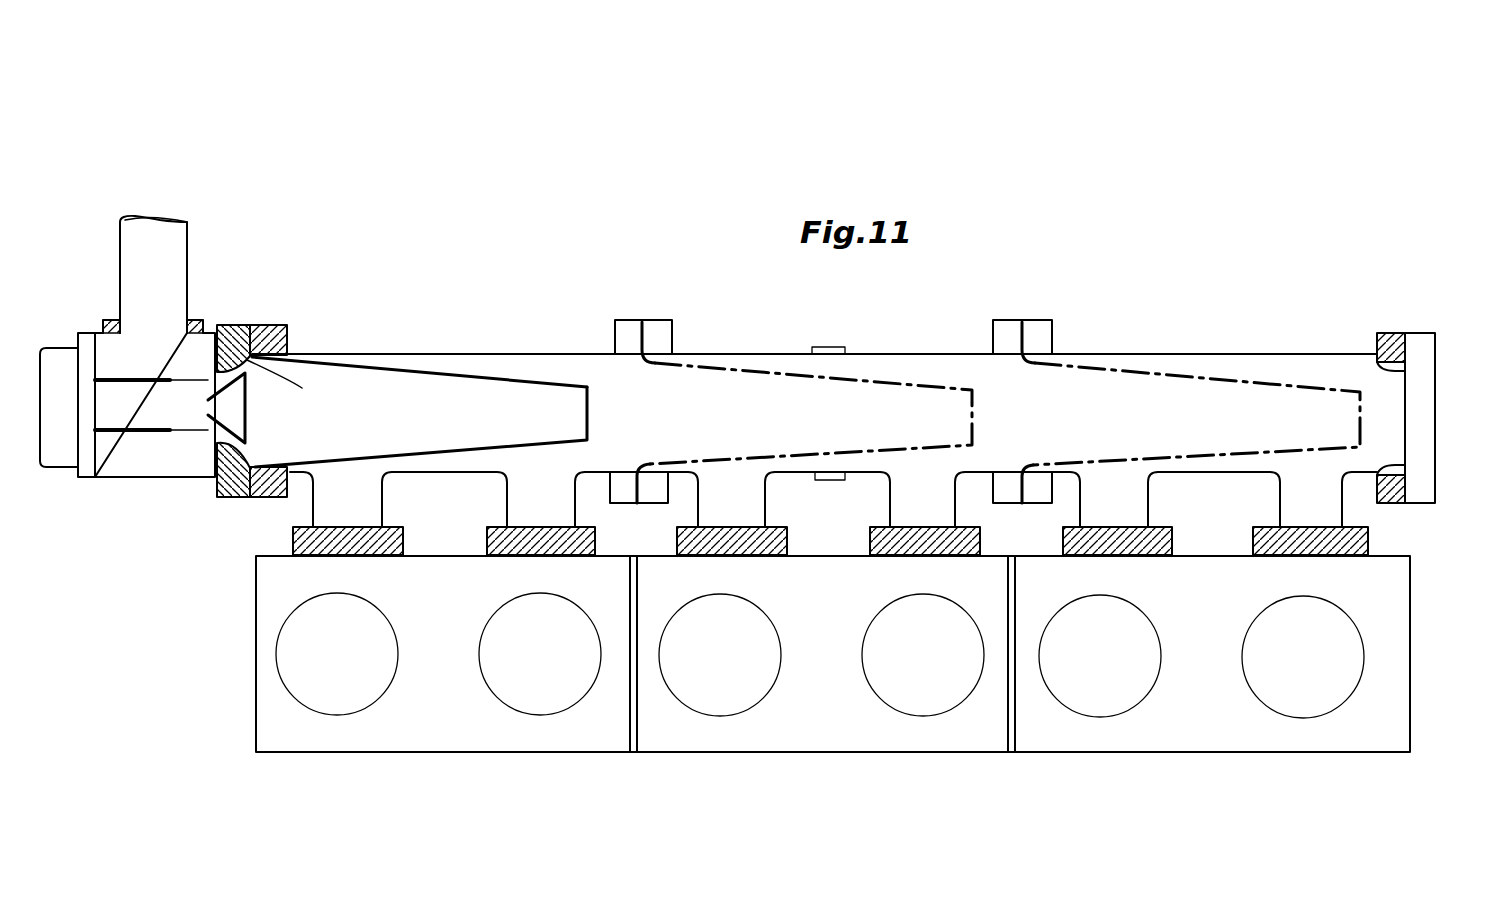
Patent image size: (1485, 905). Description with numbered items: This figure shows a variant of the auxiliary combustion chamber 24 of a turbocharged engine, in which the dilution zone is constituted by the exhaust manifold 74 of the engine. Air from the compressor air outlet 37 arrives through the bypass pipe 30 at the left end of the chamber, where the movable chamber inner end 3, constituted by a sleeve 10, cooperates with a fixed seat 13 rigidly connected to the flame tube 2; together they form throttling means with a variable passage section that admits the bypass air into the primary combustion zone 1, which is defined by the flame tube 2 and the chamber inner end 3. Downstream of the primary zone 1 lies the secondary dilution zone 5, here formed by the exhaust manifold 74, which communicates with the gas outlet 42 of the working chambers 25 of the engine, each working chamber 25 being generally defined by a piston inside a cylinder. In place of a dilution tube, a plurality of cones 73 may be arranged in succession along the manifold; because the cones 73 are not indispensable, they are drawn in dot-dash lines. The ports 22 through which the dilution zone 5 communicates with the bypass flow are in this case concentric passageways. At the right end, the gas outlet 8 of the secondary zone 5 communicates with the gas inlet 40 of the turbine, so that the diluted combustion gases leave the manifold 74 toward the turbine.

The air outlet 37 is at (153, 192).
The bypass pipe 30 is at (172, 258).
The fixed seat 13 is at (243, 357).
The sleeve 10 is at (292, 395).
The primary combustion zone 1 is at (313, 385).
The flame tube 2 is at (415, 370).
The exhaust manifold 74 is at (512, 352).
The secondary dilution zone 5 is at (686, 395).
The cones 73 is at (1147, 365).
The chamber inner end 3 is at (266, 428).
The auxiliary combustion chamber 24 is at (255, 509).
The gas outlet 42 is at (532, 502).
The ports 22 is at (577, 455).
The working chambers 25 is at (338, 666).
The gas outlet 8 is at (1367, 427).
The gas inlet 40 is at (1464, 413).